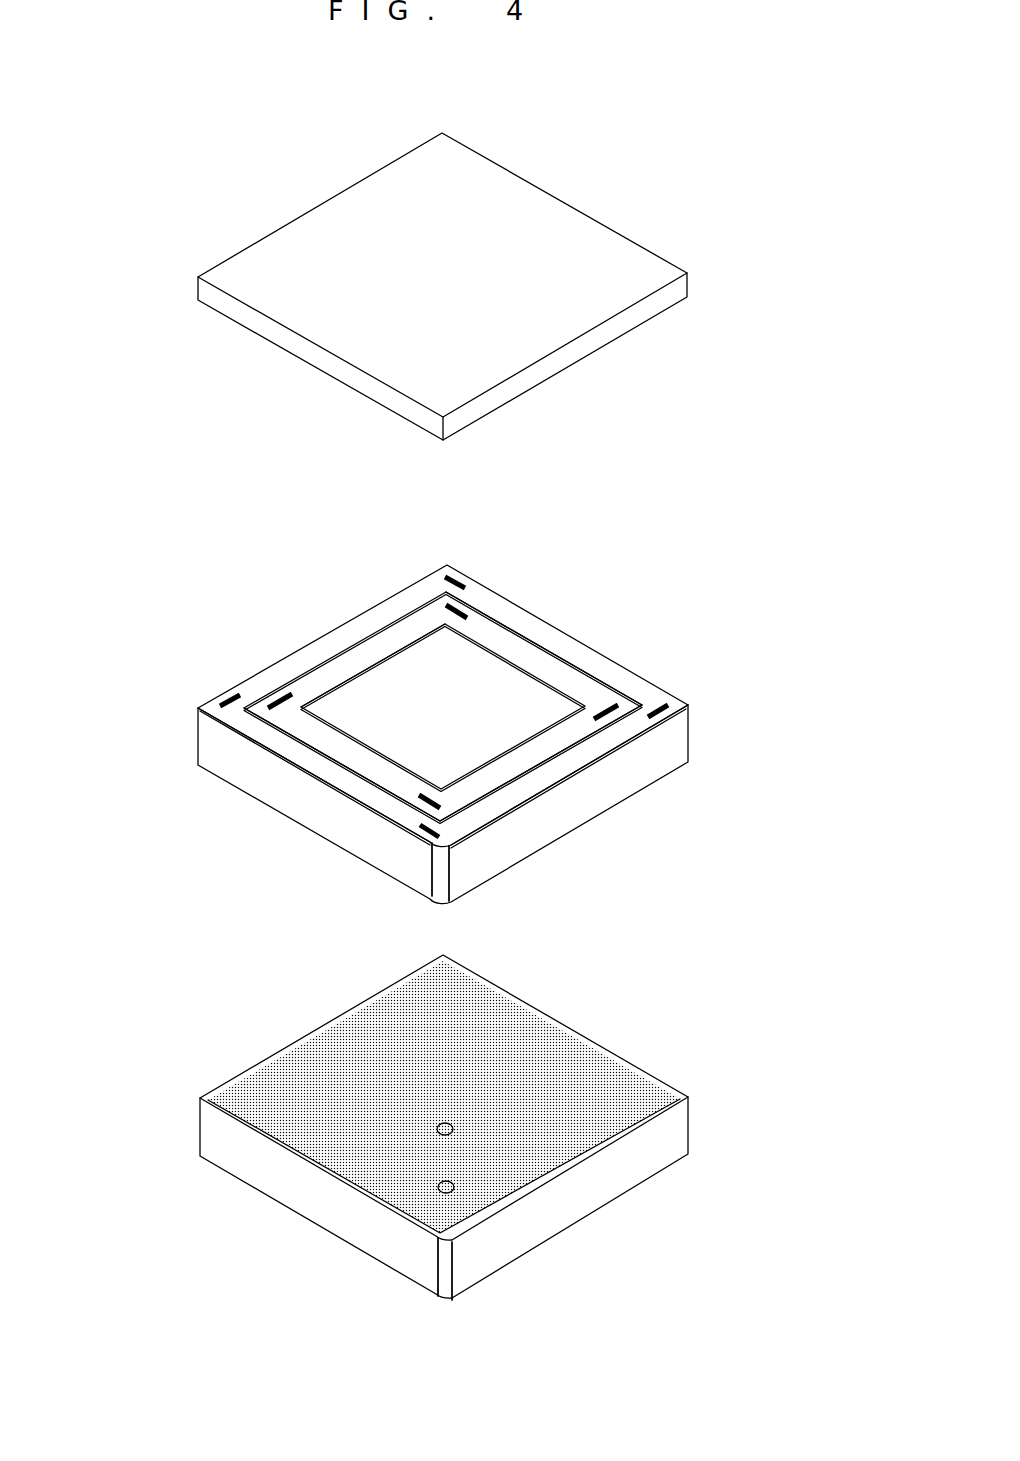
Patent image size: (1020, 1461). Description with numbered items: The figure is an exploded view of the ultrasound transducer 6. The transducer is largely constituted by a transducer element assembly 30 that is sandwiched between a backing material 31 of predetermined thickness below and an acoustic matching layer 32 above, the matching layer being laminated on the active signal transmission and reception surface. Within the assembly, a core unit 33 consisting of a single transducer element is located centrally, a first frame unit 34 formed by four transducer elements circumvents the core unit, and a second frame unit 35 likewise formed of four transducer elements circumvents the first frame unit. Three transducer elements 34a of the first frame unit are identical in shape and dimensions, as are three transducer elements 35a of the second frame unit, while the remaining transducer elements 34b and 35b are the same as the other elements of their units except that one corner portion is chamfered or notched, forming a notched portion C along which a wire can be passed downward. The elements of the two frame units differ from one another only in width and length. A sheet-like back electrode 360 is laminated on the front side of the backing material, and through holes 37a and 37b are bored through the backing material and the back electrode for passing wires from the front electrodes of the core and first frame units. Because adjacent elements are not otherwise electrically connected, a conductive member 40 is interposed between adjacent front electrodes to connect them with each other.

The ultrasound transducer 6 is at (716, 196).
The transducer element assembly 30 is at (646, 631).
The backing material 31 is at (430, 1127).
The acoustic matching layer 32 is at (252, 320).
The core unit 33 is at (440, 697).
The first frame unit 34 is at (512, 618).
The second frame unit 35 is at (668, 682).
The transducer elements of the first frame unit 34a is at (323, 715).
The transducer elements of the second frame unit 35a is at (503, 607).
The notched transducer element of the first frame unit 34b is at (512, 770).
The notched transducer element of the second frame unit 35b is at (590, 763).
The back electrode 360 is at (267, 1077).
The through hole 37a is at (452, 1122).
The through hole 37b is at (452, 1182).
The conductive member 40 is at (468, 612).
The notched portion C is at (478, 782).